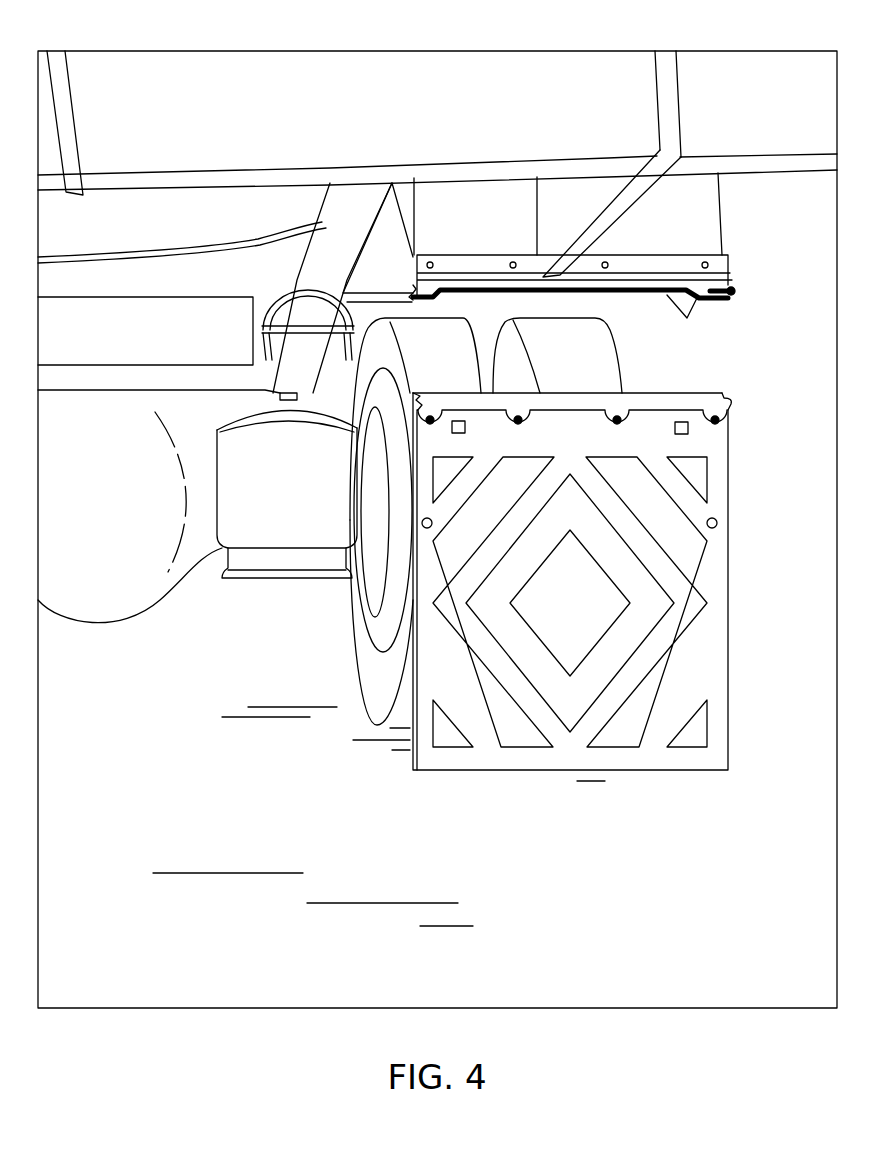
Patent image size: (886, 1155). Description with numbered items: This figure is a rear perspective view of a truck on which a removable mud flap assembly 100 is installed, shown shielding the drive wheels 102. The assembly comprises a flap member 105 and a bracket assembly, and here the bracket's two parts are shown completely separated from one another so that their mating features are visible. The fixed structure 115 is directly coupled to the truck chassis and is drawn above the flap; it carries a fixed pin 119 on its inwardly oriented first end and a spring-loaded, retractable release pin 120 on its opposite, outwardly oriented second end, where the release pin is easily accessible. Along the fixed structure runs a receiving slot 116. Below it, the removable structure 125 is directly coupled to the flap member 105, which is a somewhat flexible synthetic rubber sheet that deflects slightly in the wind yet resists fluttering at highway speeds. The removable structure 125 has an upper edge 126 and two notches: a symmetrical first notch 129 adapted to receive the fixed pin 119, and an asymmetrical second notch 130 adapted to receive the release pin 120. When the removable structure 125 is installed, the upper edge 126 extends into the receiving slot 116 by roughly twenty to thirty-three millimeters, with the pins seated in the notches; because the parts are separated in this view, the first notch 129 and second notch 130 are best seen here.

The removable mud flap assembly 100 is at (407, 557).
The drive wheels 102 is at (388, 730).
The flap member 105 is at (693, 772).
The fixed structure 115 is at (733, 265).
The receiving slot 116 is at (570, 318).
The fixed pin 119 is at (413, 290).
The release pin 120 is at (738, 290).
The removable structure 125 is at (715, 428).
The upper edge 126 is at (640, 392).
The first notch 129 is at (418, 396).
The second notch 130 is at (730, 402).